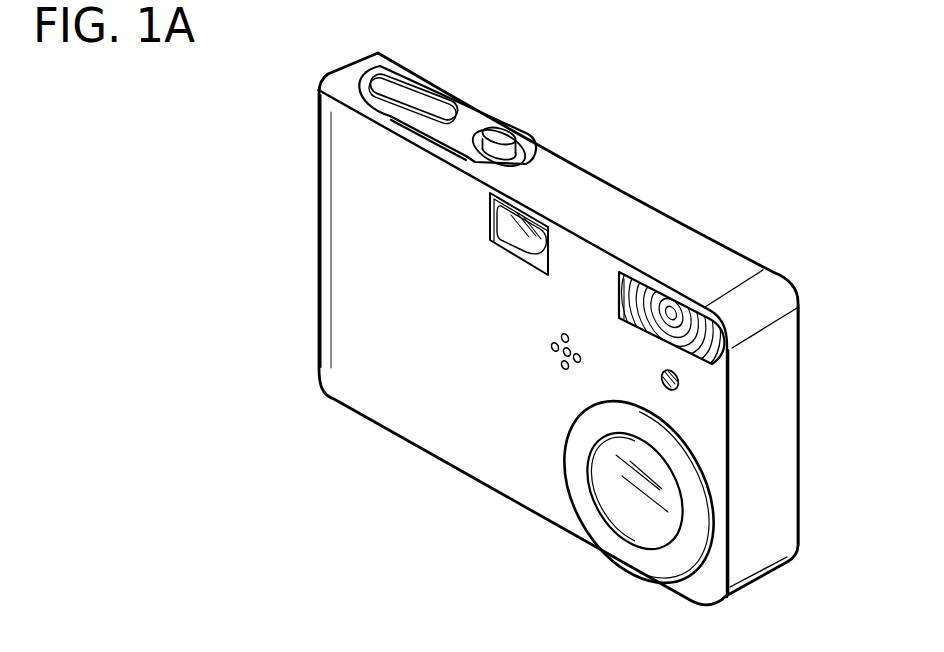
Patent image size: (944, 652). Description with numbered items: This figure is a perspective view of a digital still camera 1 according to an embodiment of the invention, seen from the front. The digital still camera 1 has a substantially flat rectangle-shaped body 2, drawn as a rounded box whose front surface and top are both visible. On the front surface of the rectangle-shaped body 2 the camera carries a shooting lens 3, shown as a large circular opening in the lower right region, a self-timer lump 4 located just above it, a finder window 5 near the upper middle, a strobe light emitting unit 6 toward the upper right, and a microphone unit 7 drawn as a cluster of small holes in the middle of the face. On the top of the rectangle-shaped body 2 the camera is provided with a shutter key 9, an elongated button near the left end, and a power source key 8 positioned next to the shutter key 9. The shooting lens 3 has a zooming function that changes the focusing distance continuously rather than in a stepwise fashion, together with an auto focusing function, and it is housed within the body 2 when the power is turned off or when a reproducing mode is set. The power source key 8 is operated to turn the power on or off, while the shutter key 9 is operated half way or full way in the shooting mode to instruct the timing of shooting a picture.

The digital still camera 1 is at (716, 149).
The rectangle-shaped body 2 is at (800, 356).
The shooting lens 3 is at (618, 491).
The self-timer lump 4 is at (676, 389).
The finder window 5 is at (535, 208).
The strobe light emitting unit 6 is at (682, 308).
The microphone unit 7 is at (547, 359).
The power source key 8 is at (474, 158).
The shutter key 9 is at (406, 103).